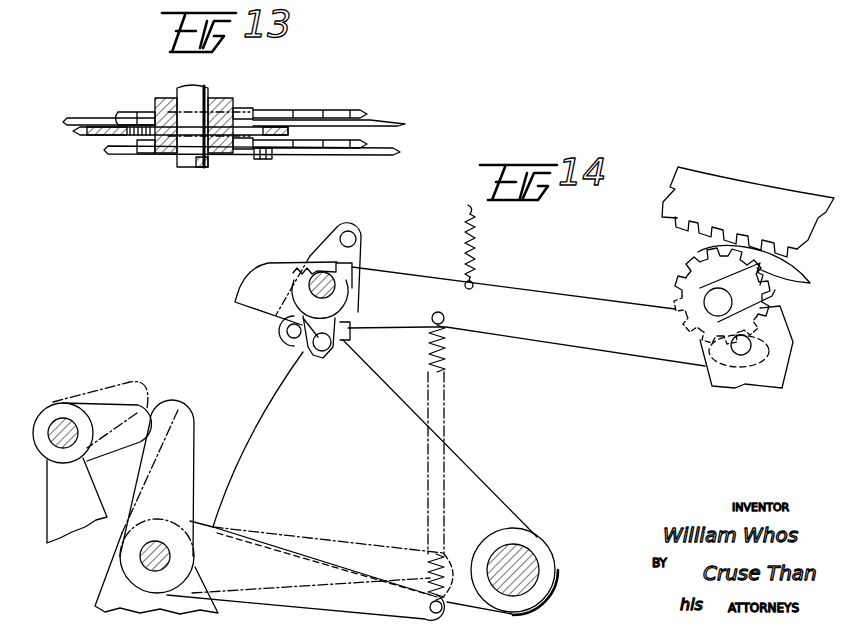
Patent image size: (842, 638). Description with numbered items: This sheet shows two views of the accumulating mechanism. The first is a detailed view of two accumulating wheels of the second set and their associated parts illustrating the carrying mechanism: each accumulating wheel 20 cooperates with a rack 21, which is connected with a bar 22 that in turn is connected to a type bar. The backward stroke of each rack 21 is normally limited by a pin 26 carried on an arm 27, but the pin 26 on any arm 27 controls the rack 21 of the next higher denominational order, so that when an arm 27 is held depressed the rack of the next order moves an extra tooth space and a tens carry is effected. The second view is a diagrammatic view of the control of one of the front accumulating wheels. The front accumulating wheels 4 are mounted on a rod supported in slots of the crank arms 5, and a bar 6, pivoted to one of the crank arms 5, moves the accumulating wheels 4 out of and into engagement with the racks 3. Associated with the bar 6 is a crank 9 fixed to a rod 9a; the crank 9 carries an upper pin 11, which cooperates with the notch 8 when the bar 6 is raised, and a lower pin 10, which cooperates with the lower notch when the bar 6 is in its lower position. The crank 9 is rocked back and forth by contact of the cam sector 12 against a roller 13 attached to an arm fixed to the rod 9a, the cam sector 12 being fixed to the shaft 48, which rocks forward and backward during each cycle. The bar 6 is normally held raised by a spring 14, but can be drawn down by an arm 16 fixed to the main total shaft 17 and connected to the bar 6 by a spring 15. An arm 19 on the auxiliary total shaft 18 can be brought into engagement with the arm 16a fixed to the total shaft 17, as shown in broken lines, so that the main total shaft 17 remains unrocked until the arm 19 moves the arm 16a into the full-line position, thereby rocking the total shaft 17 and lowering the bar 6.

In FIG. 14, the rack 3 is at (743, 193).
In FIG. 14, the front accumulating wheel 4 is at (678, 273).
In FIG. 14, the crank arm 5 is at (778, 355).
In FIG. 14, the bar 6 is at (560, 302).
In FIG. 14, the notch 8 is at (352, 268).
In FIG. 14, the crank 9 is at (334, 263).
In FIG. 14, the rod 9a is at (268, 265).
In FIG. 14, the lower pin 10 is at (287, 331).
In FIG. 14, the upper pin 11 is at (357, 233).
In FIG. 14, the cam sector 12 is at (276, 382).
In FIG. 14, the roller 13 is at (308, 348).
In FIG. 14, the spring 14 is at (478, 233).
In FIG. 14, the spring 15 is at (453, 352).
In FIG. 14, the arm 16 is at (282, 557).
In FIG. 14, the arm 16a is at (183, 445).
In FIG. 14, the main total shaft 17 is at (348, 338).
In FIG. 14, the auxiliary total shaft 18 is at (53, 420).
In FIG. 14, the arm 19 is at (108, 408).
In FIG. 13, the accumulating wheel 20 is at (142, 112).
In FIG. 13, the rack 21 is at (333, 114).
In FIG. 13, the bar 22 is at (398, 119).
In FIG. 13, the pin 26 is at (270, 113).
In FIG. 13, the arm 27 is at (93, 138).
In FIG. 14, the shaft 48 is at (520, 550).